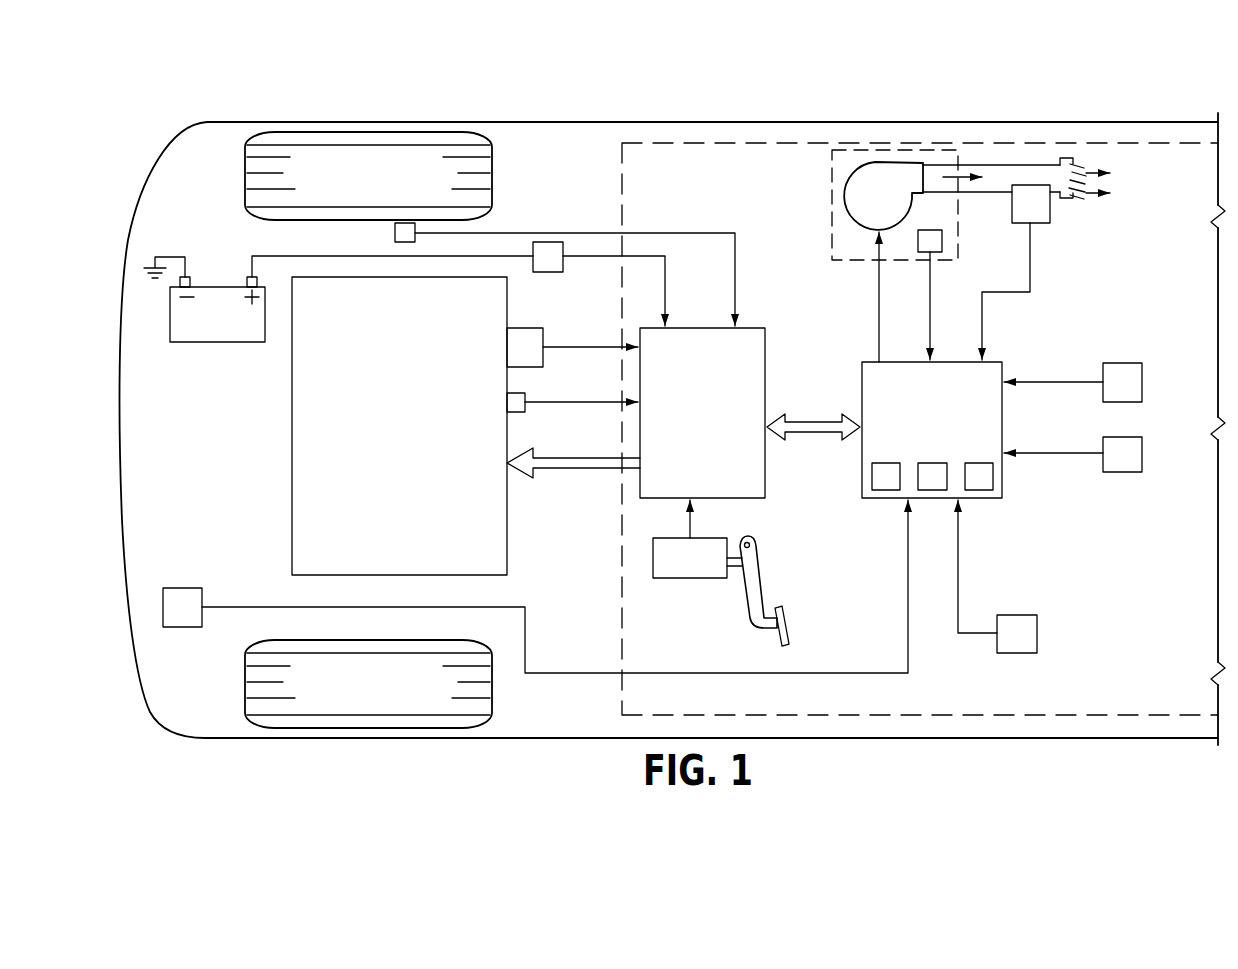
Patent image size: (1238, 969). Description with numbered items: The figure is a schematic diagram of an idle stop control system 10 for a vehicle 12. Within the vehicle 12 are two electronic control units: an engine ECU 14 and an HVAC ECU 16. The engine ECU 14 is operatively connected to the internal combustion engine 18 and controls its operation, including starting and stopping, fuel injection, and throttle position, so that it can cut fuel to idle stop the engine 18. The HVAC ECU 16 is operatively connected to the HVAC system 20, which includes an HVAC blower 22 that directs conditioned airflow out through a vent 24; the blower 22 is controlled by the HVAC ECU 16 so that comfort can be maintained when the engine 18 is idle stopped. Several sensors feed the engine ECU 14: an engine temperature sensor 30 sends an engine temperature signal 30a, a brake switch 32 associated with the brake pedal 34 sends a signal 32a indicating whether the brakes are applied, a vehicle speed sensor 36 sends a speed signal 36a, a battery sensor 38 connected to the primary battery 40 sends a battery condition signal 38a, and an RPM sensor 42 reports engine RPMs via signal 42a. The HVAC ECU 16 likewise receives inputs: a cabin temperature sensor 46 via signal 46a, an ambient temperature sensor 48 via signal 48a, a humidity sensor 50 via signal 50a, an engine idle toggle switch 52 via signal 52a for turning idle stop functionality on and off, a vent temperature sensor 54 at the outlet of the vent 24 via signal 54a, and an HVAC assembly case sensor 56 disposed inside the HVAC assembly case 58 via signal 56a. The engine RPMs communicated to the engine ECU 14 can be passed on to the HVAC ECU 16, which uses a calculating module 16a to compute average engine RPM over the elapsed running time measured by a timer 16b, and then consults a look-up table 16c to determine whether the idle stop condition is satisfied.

The idle stop control system 10 is at (769, 170).
The vehicle 12 is at (542, 106).
The engine electronic control unit 14 is at (767, 352).
The HVAC electronic control unit 16 is at (848, 358).
The calculating module 16a is at (884, 489).
The timer 16b is at (932, 487).
The look-up table 16c is at (980, 488).
The internal combustion engine 18 is at (300, 437).
The HVAC system 20 is at (989, 146).
The HVAC blower 22 is at (850, 210).
The vent 24 is at (1066, 160).
The engine temperature sensor 30 is at (540, 338).
The engine temperature signal 30a is at (587, 349).
The brake switch 32 is at (682, 578).
The brake switch signal 32a is at (690, 522).
The brake pedal 34 is at (780, 620).
The vehicle speed sensor 36 is at (393, 232).
The vehicle speed signal 36a is at (503, 230).
The battery sensor 38 is at (548, 271).
The battery signal 38a is at (597, 260).
The primary battery 40 is at (215, 338).
The RPM sensor 42 is at (518, 412).
The RPM signal 42a is at (582, 403).
The cabin temperature sensor 46 is at (1123, 472).
The cabin temperature signal 46a is at (1055, 453).
The ambient temperature sensor 48 is at (176, 588).
The ambient temperature signal 48a is at (503, 607).
The humidity sensor 50 is at (1118, 363).
The humidity signal 50a is at (1043, 380).
The engine idle toggle switch 52 is at (1040, 632).
The toggle switch signal 52a is at (960, 588).
The vent temperature sensor 54 is at (1042, 218).
The vent temperature signal 54a is at (1033, 263).
The HVAC assembly case sensor 56 is at (938, 240).
The case sensor signal 56a is at (933, 323).
The HVAC assembly case 58 is at (831, 186).